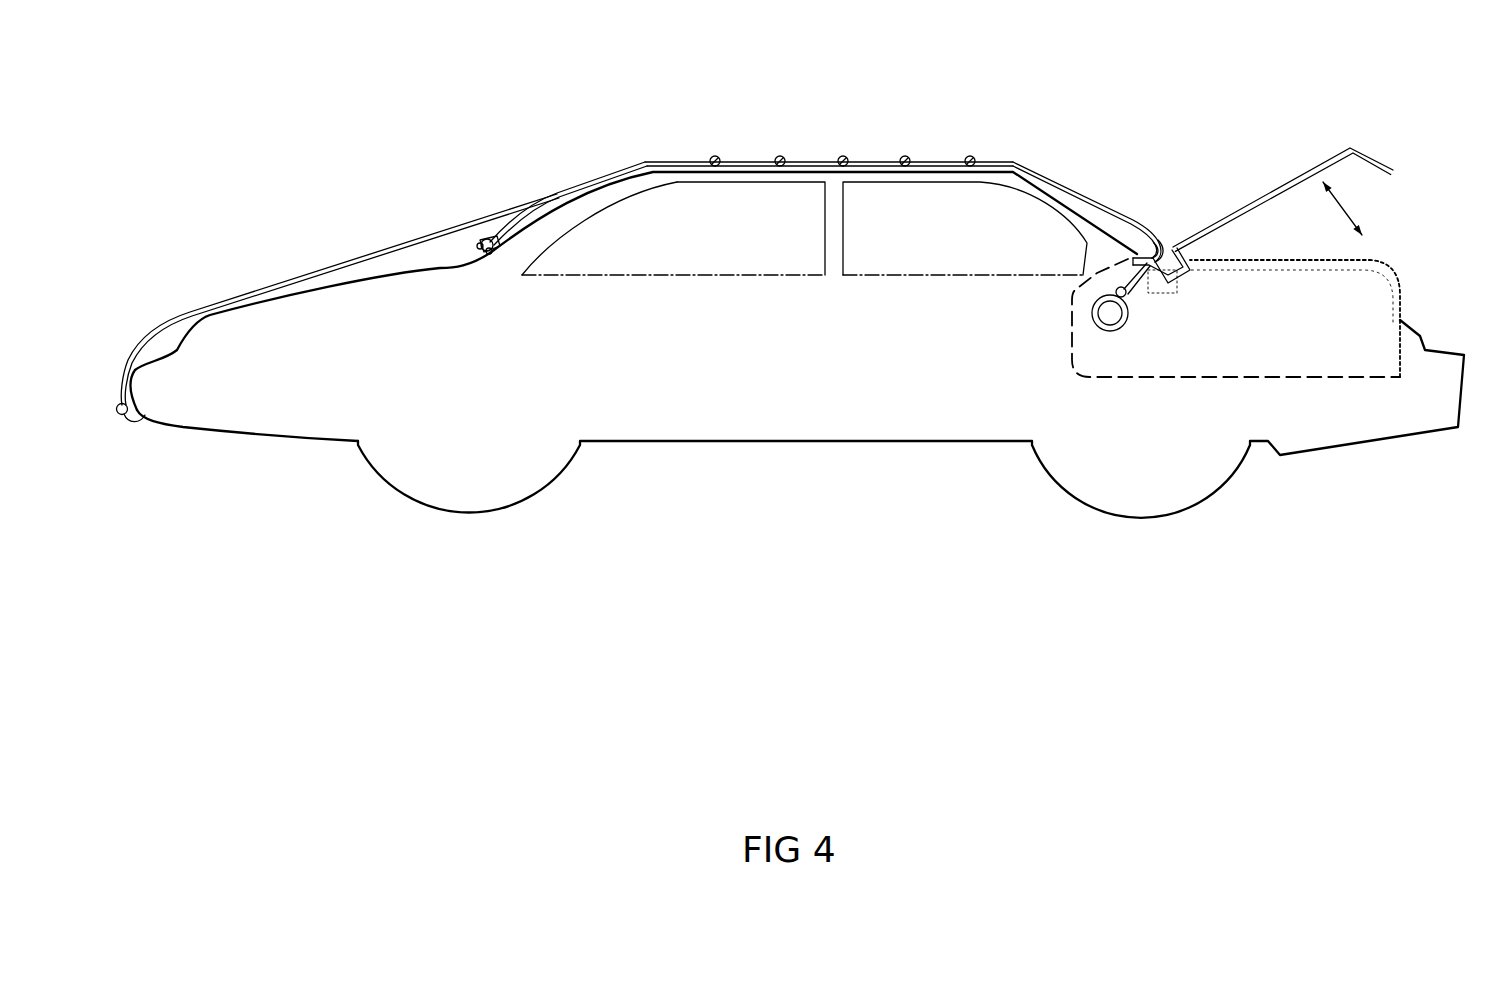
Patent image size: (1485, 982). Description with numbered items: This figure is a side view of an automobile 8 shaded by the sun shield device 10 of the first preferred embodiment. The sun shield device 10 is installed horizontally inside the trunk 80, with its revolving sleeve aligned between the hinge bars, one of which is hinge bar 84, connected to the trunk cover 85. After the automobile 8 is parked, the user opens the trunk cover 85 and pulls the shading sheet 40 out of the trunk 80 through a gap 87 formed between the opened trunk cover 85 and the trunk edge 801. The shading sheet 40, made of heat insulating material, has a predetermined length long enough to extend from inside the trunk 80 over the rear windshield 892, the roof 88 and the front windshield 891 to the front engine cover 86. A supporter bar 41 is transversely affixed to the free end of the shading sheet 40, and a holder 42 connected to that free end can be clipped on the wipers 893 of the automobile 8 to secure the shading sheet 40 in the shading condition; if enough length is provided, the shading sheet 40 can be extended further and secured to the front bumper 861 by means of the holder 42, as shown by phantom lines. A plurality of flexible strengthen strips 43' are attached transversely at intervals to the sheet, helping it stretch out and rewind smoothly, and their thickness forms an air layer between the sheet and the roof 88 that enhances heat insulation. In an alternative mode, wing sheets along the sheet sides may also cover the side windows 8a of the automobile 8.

The automobile 8 is at (792, 417).
The side windows 8a is at (873, 268).
The sun shield device 10 is at (1110, 342).
The shading sheet 40 is at (1087, 207).
The supporter bar 41 is at (490, 238).
The holder 42 is at (475, 246).
The strengthen strips 43' is at (823, 130).
The trunk 80 is at (1192, 345).
The trunk edge 801 is at (1147, 242).
The hinge bar 84 is at (1177, 282).
The trunk cover 85 is at (1295, 180).
The front engine cover 86 is at (397, 270).
The front bumper 861 is at (158, 405).
The gap 87 is at (1168, 243).
The roof 88 is at (878, 170).
The front windshield 891 is at (597, 178).
The rear windshield 892 is at (1110, 148).
The wipers 893 is at (488, 257).